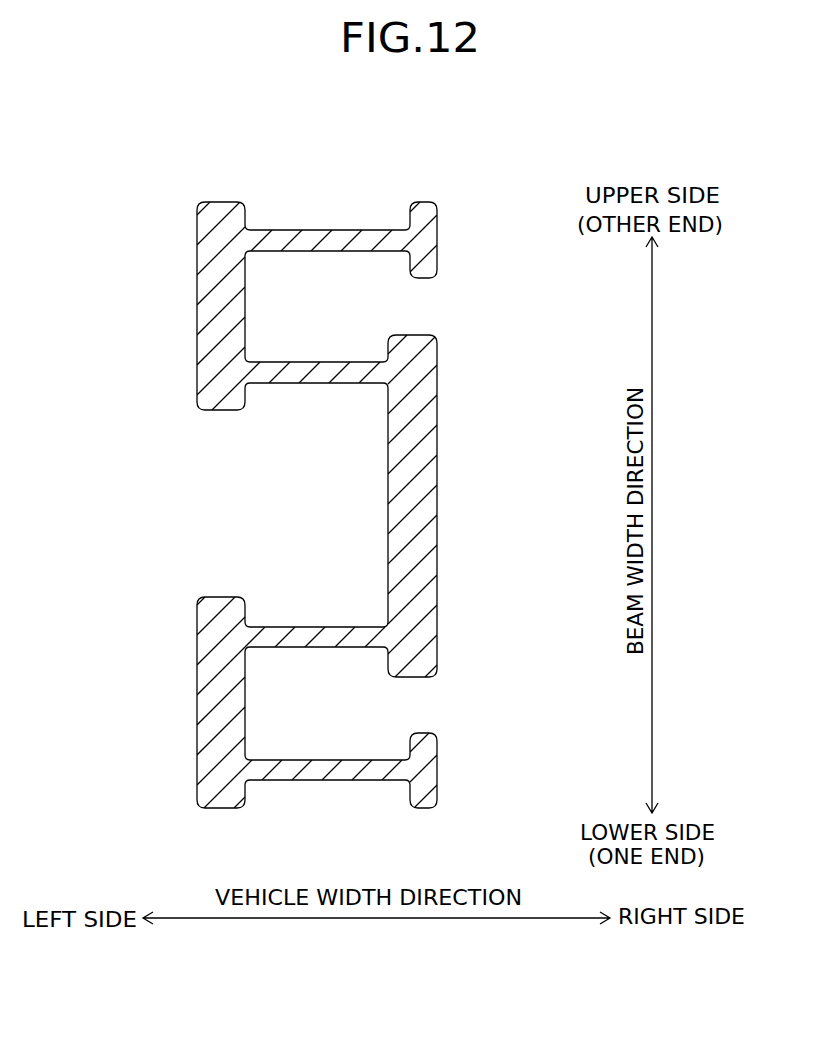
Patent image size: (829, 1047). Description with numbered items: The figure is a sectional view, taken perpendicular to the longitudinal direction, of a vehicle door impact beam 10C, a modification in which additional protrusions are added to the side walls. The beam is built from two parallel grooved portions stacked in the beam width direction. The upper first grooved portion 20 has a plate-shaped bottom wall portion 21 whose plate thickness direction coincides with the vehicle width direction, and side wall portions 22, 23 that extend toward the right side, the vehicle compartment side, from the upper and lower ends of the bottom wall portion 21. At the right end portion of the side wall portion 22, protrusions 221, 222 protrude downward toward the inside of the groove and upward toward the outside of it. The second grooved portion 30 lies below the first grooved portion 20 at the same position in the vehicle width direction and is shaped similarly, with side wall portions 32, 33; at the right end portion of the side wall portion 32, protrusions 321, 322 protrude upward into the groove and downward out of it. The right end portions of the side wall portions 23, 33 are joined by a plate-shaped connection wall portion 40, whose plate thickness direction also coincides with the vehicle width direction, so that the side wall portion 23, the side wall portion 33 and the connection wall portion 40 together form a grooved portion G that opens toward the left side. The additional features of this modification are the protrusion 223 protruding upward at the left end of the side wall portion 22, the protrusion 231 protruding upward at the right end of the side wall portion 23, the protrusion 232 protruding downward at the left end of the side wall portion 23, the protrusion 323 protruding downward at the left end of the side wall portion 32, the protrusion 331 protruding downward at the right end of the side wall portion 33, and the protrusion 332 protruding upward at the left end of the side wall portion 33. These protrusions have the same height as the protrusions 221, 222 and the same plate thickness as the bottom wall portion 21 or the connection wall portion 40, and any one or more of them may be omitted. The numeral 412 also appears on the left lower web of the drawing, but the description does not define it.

The vehicle door impact beam 10C is at (155, 178).
The first grooved portion 20 is at (497, 309).
The bottom wall portion 21 is at (197, 313).
The side wall portion 22 is at (318, 230).
The side wall portion 23 is at (305, 383).
The protrusion 221 is at (437, 262).
The protrusion 222 is at (437, 212).
The protrusion 223 is at (197, 218).
The protrusion 231 is at (437, 340).
The protrusion 232 is at (197, 395).
The second grooved portion 30 is at (502, 709).
The side wall portion 32 is at (330, 780).
The side wall portion 33 is at (298, 627).
The protrusion 321 is at (437, 745).
The protrusion 322 is at (437, 793).
The protrusion 323 is at (197, 795).
The protrusion 331 is at (437, 648).
The protrusion 332 is at (197, 612).
The connection wall portion 40 is at (437, 462).
The lower web 412 is at (197, 693).
The grooved portion G is at (259, 487).